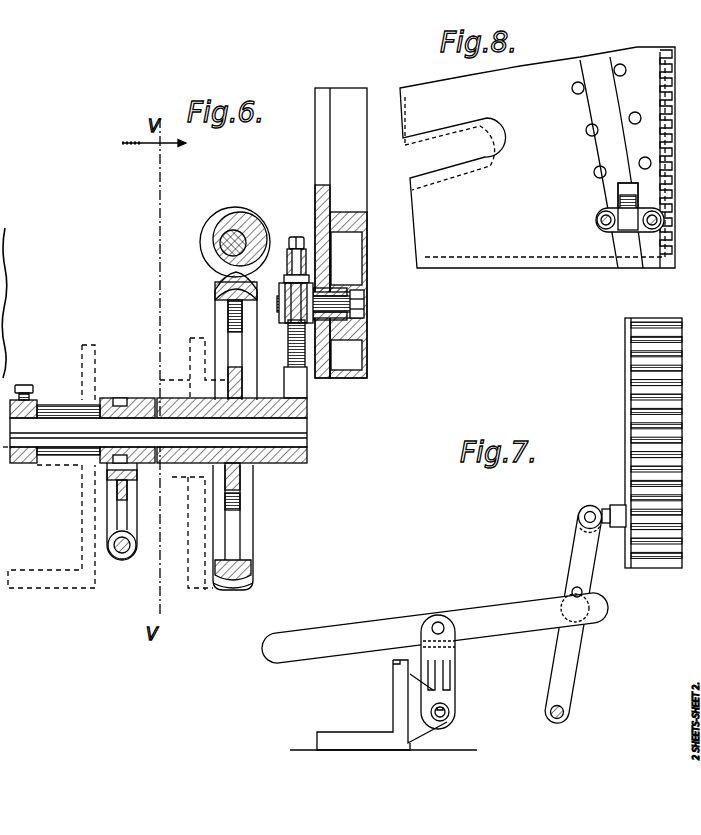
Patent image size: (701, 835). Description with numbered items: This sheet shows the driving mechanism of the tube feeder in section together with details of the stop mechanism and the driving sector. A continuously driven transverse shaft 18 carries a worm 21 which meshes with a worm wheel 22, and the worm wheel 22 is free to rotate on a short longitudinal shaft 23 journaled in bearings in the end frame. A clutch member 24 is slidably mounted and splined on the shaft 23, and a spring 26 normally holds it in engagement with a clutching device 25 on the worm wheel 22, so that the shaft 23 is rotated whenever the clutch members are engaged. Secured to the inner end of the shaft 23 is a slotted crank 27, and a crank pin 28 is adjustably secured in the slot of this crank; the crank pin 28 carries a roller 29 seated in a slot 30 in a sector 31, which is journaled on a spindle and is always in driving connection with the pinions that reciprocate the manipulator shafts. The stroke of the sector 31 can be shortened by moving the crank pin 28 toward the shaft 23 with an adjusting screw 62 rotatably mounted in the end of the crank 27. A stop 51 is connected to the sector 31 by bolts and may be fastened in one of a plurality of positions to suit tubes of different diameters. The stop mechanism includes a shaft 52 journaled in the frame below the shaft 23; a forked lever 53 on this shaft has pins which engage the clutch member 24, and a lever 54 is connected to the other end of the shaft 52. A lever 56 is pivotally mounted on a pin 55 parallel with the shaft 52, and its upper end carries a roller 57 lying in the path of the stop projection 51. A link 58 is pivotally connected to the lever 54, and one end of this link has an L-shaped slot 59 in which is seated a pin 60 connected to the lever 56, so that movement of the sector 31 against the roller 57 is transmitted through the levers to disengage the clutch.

In FIG. 6, the transverse shaft 18 is at (239, 222).
In FIG. 6, the worm 21 is at (206, 238).
In FIG. 6, the worm wheel 22 is at (222, 300).
In FIG. 6, the longitudinal shaft 23 is at (158, 432).
In FIG. 6, the clutch member 24 is at (128, 393).
In FIG. 6, the clutching device 25 is at (164, 398).
In FIG. 6, the spring 26 is at (60, 404).
In FIG. 6, the slotted crank 27 is at (283, 380).
In FIG. 6, the crank pin 28 is at (293, 318).
In FIG. 6, the roller 29 is at (335, 290).
In FIG. 6, the slot 30 is at (346, 345).
In FIG. 8, the slot 30 is at (537, 157).
In FIG. 6, the sector 31 is at (346, 96).
In FIG. 8, the sector 31 is at (660, 92).
In FIG. 7, the sector 31 is at (640, 376).
In FIG. 8, the stop 51 is at (618, 194).
In FIG. 7, the stop 51 is at (614, 505).
In FIG. 6, the shaft 52 is at (110, 544).
In FIG. 7, the shaft 52 is at (449, 712).
In FIG. 6, the forked lever 53 is at (116, 494).
In FIG. 7, the lever 54 is at (435, 666).
In FIG. 7, the pin 55 is at (565, 712).
In FIG. 7, the lever 56 is at (575, 648).
In FIG. 7, the roller 57 is at (579, 508).
In FIG. 7, the link 58 is at (435, 628).
In FIG. 7, the L-shaped slot 59 is at (583, 608).
In FIG. 7, the pin 60 is at (583, 592).
In FIG. 6, the adjusting screw 62 is at (296, 237).